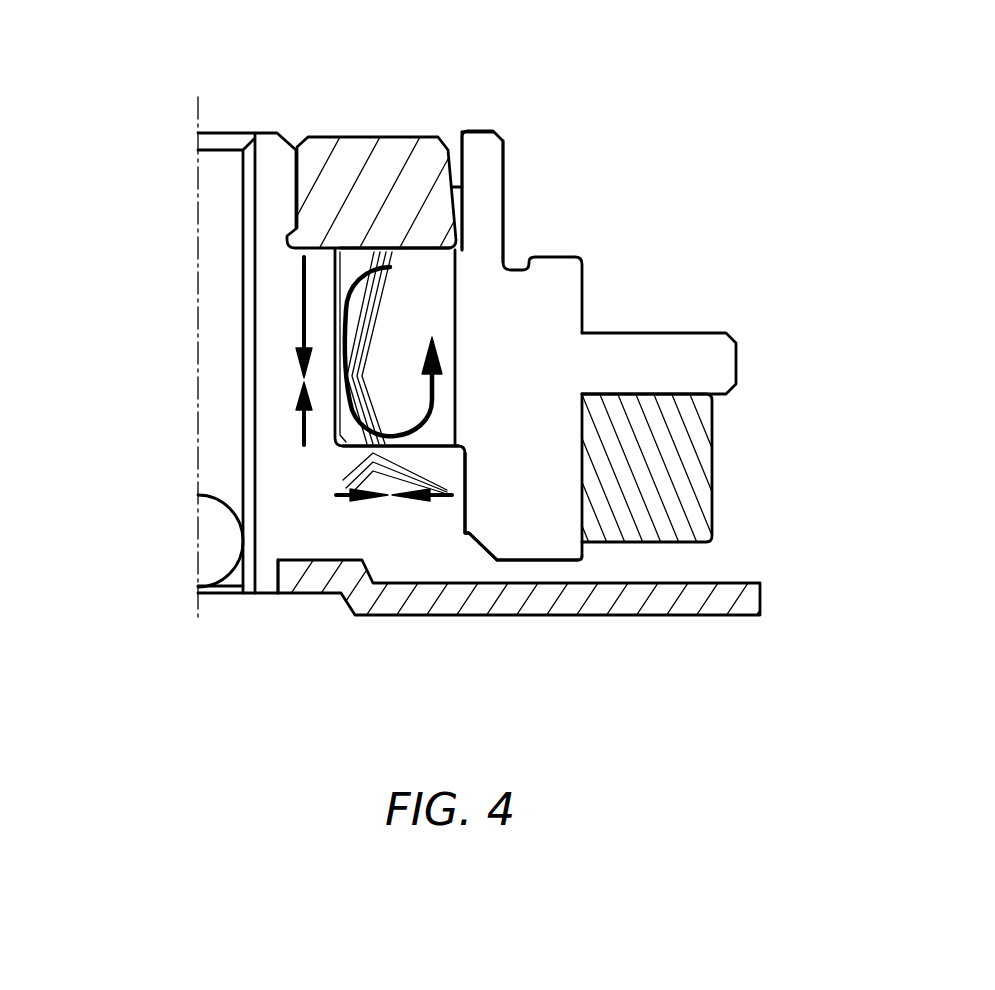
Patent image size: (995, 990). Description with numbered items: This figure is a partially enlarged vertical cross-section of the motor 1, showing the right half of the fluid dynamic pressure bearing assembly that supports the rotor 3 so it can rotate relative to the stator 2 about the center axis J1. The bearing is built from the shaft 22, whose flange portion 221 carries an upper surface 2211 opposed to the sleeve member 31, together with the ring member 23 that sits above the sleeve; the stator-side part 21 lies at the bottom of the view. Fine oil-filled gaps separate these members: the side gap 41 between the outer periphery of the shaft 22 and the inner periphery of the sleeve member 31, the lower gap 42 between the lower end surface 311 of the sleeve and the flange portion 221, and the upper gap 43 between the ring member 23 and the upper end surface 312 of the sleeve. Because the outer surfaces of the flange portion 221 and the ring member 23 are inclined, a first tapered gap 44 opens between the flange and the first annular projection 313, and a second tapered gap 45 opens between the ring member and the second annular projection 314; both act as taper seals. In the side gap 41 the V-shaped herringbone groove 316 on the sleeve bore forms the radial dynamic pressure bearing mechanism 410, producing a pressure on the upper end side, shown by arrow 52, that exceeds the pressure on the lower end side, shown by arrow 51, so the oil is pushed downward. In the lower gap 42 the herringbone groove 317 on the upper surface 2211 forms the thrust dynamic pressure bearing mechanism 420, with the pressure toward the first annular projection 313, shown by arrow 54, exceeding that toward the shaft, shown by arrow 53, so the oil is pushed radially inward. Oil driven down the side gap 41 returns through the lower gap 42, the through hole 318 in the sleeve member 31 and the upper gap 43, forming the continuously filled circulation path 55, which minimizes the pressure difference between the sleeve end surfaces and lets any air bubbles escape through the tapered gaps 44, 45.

The motor 1 is at (90, 42).
The center axis J1 is at (197, 110).
The stator 2 is at (254, 665).
The inner ring 21 is at (650, 617).
The shaft 22 is at (267, 132).
The flange portion 221 is at (370, 520).
The upper surface 2211 is at (440, 432).
The ring member 23 is at (358, 137).
The rotor 3 is at (723, 164).
The sleeve member 31 is at (700, 333).
The lower end surface 311 is at (393, 455).
The upper end surface 312 is at (392, 233).
The first annular projection 313 is at (523, 503).
The second annular projection 314 is at (485, 177).
The herringbone groove 316 is at (398, 311).
The herringbone groove 317 is at (335, 468).
The through hole 318 is at (462, 348).
The side gap 41 is at (320, 303).
The radial dynamic pressure bearing mechanism 410 is at (106, 231).
The lower gap 42 is at (425, 462).
The thrust dynamic pressure bearing mechanism 420 is at (444, 702).
The upper gap 43 is at (430, 233).
The first tapered gap 44 is at (463, 552).
The second tapered gap 45 is at (458, 134).
The arrow 51 is at (302, 423).
The arrow 52 is at (300, 312).
The arrow 53 is at (338, 500).
The arrow 54 is at (430, 480).
The circulation path 55 is at (435, 388).